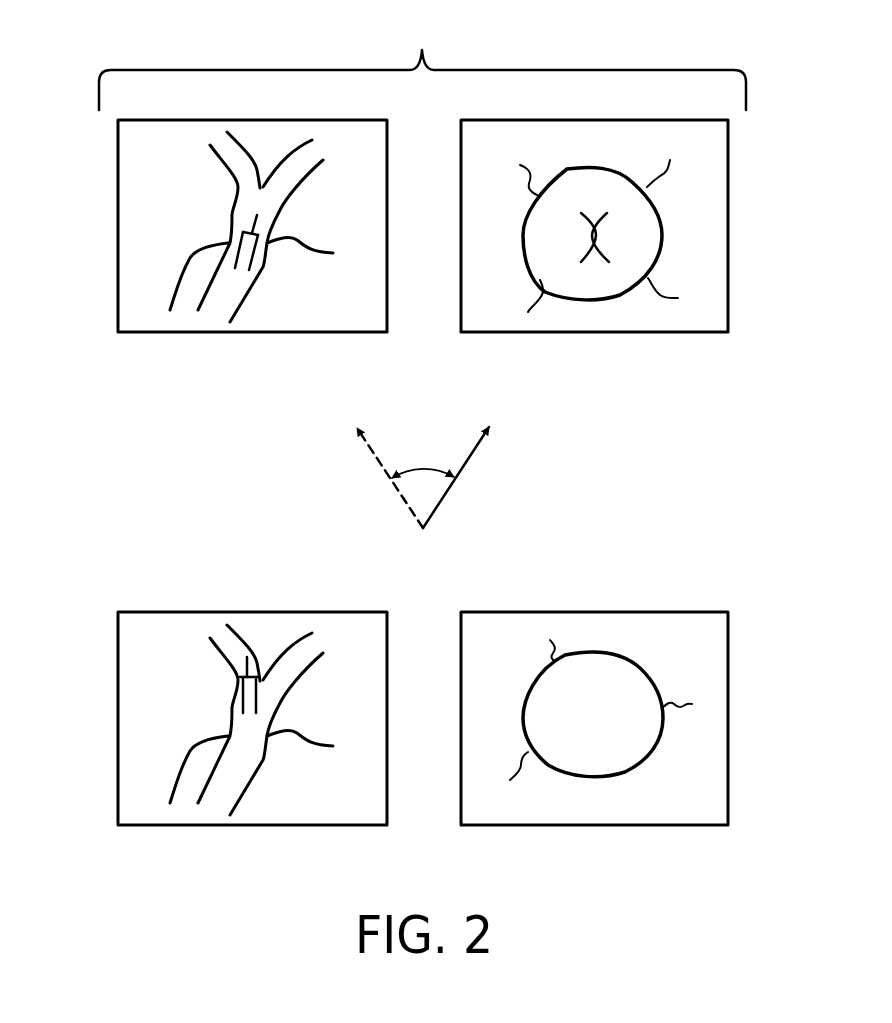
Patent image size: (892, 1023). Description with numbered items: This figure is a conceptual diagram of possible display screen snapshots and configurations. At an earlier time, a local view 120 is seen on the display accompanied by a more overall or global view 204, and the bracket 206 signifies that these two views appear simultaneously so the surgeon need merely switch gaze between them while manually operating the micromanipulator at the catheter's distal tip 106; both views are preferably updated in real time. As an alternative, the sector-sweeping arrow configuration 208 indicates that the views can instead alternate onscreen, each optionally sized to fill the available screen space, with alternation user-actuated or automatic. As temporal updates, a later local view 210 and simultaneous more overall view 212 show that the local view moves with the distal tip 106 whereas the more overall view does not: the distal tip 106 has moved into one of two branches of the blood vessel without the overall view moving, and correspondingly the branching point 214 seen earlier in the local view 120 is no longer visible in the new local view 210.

The distal tip 106 is at (243, 224).
The local view 120 is at (728, 224).
The overall view 204 is at (118, 227).
The bracket 206 is at (422, 64).
The sector-sweeping arrow configuration 208 is at (484, 476).
The local view 210 is at (728, 716).
The overall view 212 is at (118, 716).
The branching point 214 is at (609, 238).